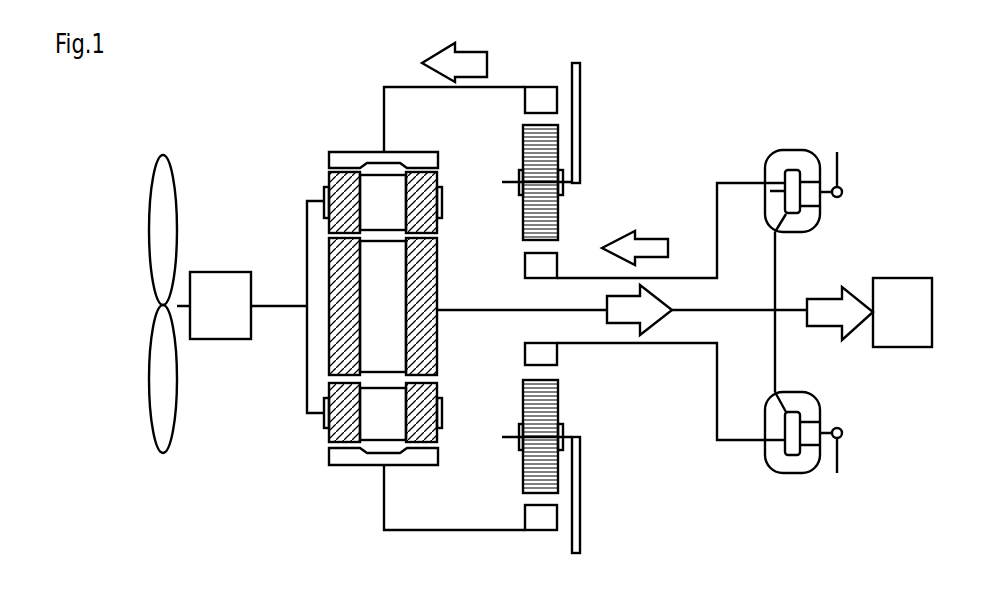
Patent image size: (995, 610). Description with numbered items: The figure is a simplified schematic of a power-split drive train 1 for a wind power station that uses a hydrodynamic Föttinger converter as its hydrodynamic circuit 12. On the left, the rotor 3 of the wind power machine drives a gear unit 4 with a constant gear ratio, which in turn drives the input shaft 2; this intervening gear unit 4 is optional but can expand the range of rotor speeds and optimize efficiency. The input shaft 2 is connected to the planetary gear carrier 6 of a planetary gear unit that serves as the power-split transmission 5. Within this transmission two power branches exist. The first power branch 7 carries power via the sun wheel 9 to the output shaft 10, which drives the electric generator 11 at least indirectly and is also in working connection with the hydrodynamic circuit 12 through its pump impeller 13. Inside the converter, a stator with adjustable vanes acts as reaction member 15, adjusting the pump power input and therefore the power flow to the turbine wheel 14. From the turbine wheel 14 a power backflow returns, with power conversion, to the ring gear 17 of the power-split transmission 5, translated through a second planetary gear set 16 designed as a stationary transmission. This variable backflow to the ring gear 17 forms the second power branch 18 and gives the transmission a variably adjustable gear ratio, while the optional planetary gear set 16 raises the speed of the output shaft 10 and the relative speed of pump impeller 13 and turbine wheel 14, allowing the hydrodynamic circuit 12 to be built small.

The drive train 1 is at (525, 582).
The input shaft 2 is at (283, 308).
The rotor 3 is at (170, 382).
The gear unit 4 is at (228, 323).
The power-split transmission 5 is at (364, 504).
The planetary gear carrier 6 is at (392, 212).
The first power branch 7 is at (628, 320).
The sun wheel 9 is at (392, 312).
The output shaft 10 is at (458, 306).
The electric generator 11 is at (913, 324).
The hydrodynamic circuit 12 is at (803, 144).
The pump impeller 13 is at (770, 218).
The turbine wheel 14 is at (772, 182).
The reaction member 15 is at (822, 198).
The second planetary gear set 16 is at (617, 148).
The ring gear 17 is at (372, 160).
The second power branch 18 is at (470, 60).